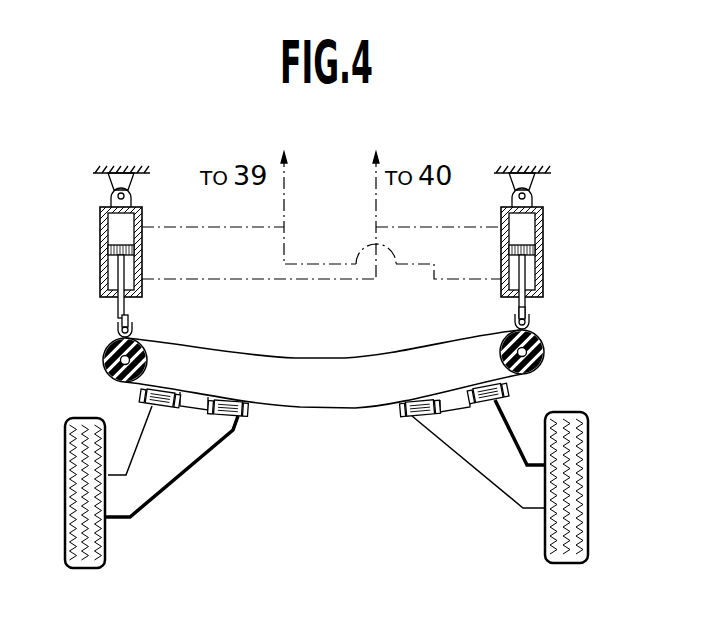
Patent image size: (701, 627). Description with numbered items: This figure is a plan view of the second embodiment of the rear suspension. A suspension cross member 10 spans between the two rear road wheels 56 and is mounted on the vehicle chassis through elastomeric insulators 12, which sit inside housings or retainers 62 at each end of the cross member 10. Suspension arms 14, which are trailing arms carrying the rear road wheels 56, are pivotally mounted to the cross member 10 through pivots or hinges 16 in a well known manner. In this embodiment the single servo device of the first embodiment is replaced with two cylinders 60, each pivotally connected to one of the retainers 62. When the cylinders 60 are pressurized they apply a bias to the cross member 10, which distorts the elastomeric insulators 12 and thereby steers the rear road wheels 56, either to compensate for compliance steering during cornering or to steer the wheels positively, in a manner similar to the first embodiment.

The suspension cross member 10 is at (401, 360).
The elastomeric insulators 12 is at (143, 345).
The suspension arms 14 is at (170, 474).
The pivots 16 is at (228, 416).
The rear road wheels 56 is at (105, 552).
The cylinders 60 is at (100, 238).
The retainers 62 is at (103, 352).